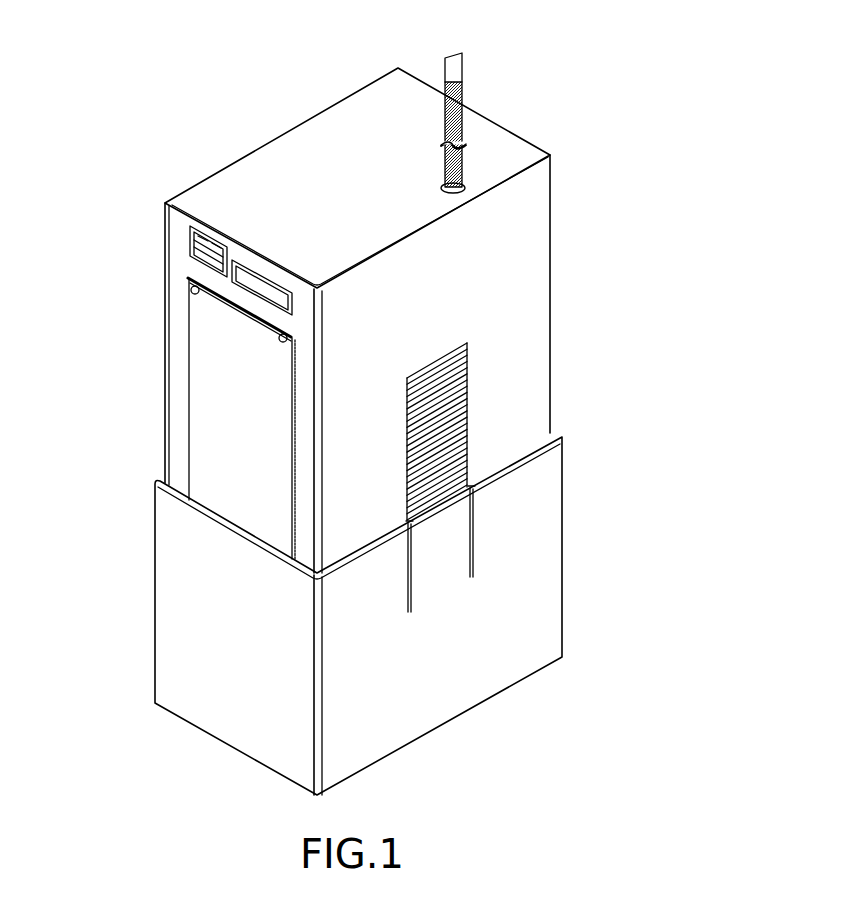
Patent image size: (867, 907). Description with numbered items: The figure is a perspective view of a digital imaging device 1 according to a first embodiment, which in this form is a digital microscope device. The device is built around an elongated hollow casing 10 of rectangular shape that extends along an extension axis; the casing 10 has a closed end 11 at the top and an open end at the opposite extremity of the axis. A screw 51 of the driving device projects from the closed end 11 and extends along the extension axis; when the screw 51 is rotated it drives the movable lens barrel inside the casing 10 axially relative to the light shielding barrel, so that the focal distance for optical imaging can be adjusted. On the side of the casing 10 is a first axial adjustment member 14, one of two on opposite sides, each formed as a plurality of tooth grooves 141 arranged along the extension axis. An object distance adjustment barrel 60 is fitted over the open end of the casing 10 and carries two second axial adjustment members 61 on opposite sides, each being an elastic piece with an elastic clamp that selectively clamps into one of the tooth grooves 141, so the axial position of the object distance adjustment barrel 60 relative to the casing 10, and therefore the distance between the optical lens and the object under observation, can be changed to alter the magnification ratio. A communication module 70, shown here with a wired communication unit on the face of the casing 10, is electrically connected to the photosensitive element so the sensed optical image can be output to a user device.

The digital imaging device 1 is at (131, 86).
The casing 10 is at (515, 360).
The closed end 11 is at (518, 152).
The first axial adjustment member 14 is at (477, 449).
The tooth grooves 141 is at (450, 379).
The screw 51 is at (460, 93).
The object distance adjustment barrel 60 is at (462, 658).
The second axial adjustment member 61 is at (453, 508).
The communication module 70 is at (258, 276).